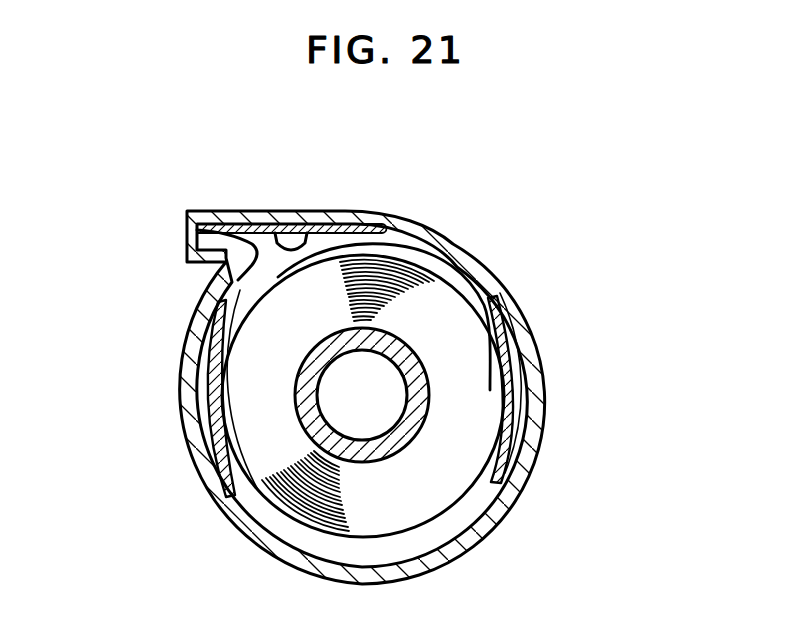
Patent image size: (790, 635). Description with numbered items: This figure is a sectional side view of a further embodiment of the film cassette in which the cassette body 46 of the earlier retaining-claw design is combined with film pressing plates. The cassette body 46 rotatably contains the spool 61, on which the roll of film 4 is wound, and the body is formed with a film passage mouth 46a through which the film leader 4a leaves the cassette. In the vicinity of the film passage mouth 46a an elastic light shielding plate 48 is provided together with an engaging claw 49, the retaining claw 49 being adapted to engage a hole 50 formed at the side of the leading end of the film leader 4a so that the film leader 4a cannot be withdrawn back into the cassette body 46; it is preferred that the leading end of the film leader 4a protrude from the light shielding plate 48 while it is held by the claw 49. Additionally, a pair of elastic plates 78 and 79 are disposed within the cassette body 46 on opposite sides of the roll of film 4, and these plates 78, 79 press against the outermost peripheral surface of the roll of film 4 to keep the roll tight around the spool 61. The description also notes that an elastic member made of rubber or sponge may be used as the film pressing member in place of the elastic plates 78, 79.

The roll of film 4 is at (419, 505).
The film leader 4a is at (451, 258).
The cassette body 46 is at (544, 456).
The film passage mouth 46a is at (192, 238).
The light shielding plate 48 is at (196, 226).
The engaging claw 49 is at (272, 222).
The hole 50 is at (305, 232).
The spool 61 is at (408, 428).
The elastic plate 78 is at (208, 378).
The elastic plate 79 is at (510, 406).